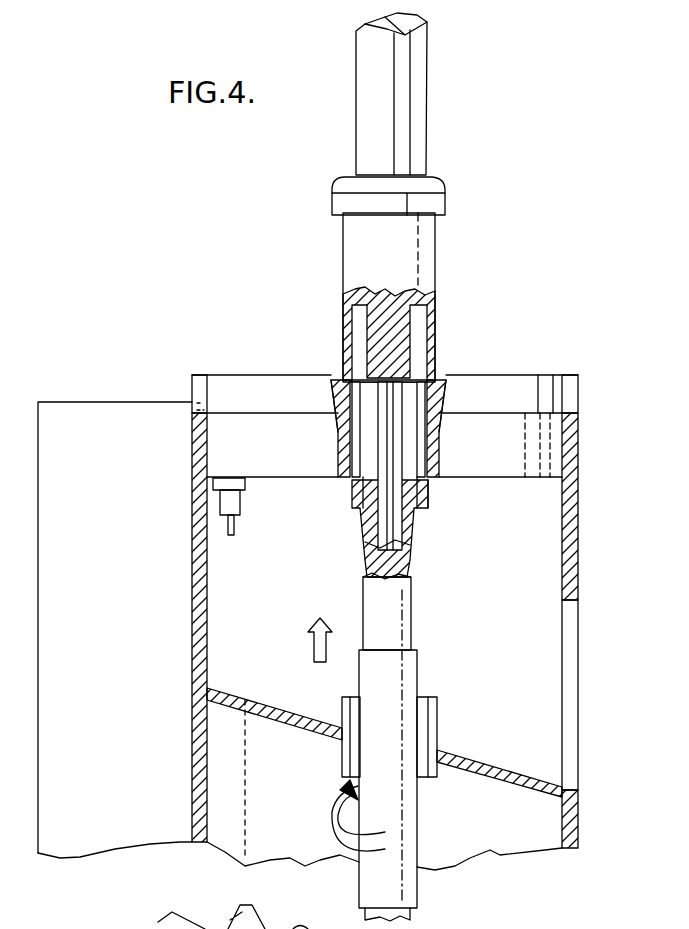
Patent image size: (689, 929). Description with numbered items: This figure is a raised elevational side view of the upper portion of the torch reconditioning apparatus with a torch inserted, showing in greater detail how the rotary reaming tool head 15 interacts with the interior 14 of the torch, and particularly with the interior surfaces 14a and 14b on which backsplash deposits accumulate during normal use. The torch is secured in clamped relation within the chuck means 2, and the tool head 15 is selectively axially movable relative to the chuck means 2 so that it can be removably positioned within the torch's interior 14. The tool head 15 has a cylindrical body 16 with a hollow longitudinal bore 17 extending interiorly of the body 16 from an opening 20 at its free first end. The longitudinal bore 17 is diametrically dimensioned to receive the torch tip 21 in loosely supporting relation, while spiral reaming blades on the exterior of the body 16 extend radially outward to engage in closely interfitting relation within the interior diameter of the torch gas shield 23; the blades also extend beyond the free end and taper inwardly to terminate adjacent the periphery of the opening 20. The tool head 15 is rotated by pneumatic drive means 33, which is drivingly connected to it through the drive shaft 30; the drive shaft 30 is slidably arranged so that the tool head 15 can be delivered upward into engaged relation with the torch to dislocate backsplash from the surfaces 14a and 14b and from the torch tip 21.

The chuck means 2 is at (560, 443).
The torch's interior 14 is at (413, 440).
The interior surface 14a is at (424, 460).
The interior surface 14b is at (372, 446).
The rotary reaming tool head 15 is at (408, 545).
The cylindrical body 16 is at (363, 549).
The longitudinal bore 17 is at (365, 522).
The opening 20 is at (215, 928).
The torch tip 21 is at (430, 482).
The torch gas shield 23 is at (350, 470).
The drive shaft 30 is at (403, 668).
The pneumatic drive means 33 is at (207, 510).